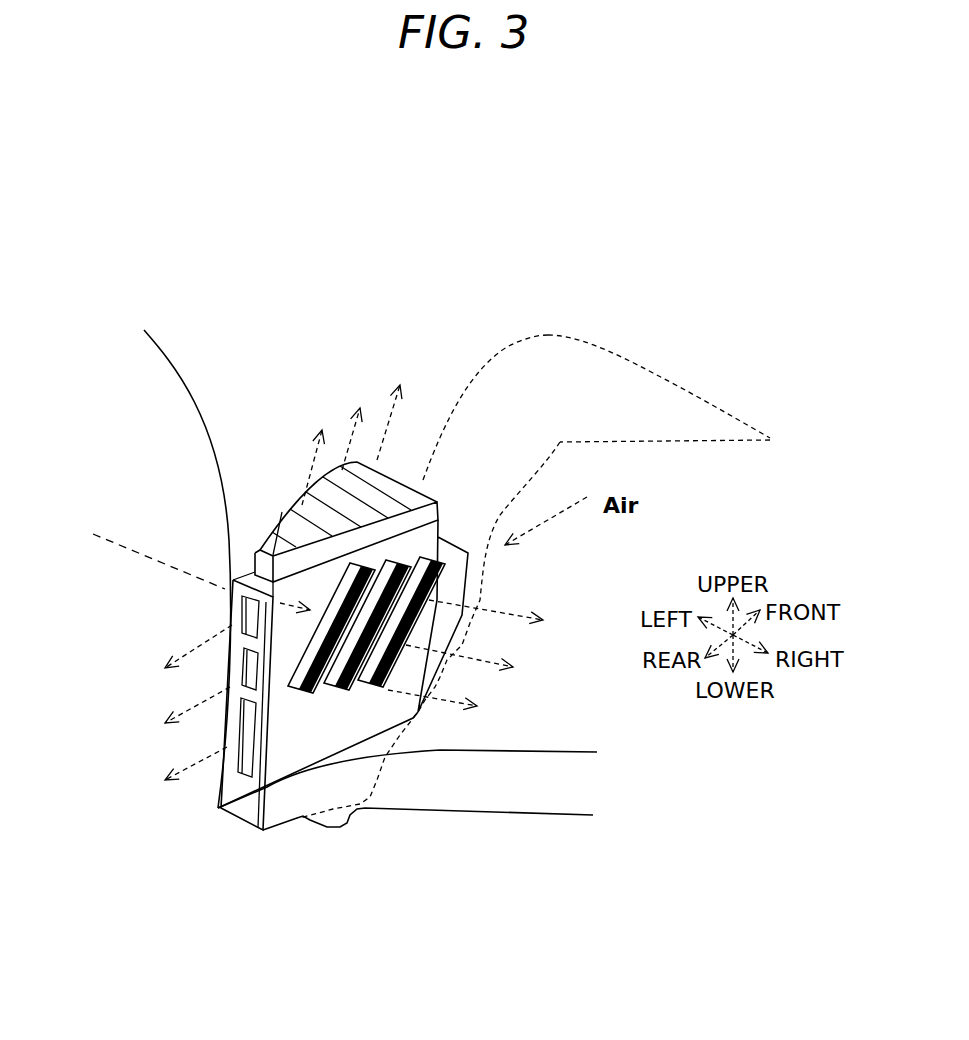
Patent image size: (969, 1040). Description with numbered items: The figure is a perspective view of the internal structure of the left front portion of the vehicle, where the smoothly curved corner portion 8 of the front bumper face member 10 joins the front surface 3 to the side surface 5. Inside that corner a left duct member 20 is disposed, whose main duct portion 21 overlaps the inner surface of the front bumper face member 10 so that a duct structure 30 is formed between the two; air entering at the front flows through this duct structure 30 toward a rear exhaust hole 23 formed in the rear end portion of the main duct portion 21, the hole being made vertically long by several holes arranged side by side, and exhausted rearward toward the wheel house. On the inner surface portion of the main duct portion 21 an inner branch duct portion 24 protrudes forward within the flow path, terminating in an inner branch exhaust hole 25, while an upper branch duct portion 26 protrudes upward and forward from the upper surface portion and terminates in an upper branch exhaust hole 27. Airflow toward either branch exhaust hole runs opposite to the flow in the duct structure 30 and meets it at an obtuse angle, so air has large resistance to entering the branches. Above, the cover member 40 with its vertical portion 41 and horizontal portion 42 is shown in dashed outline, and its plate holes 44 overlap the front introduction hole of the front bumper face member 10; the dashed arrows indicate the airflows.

The front surface 3 is at (583, 808).
The side surface 5 is at (202, 385).
The corner portion 8 is at (364, 650).
The front bumper face member 10 is at (580, 705).
The duct member 20 is at (266, 476).
The main duct portion 21 is at (300, 730).
The rear exhaust hole 23 is at (233, 602).
The inner branch duct portion 24 is at (355, 562).
The inner branch exhaust hole 25 is at (397, 653).
The upper branch duct portion 26 is at (257, 553).
The upper branch exhaust hole 27 is at (273, 520).
The duct structure 30 is at (182, 566).
The cover member 40 is at (740, 388).
The vertical portion 41 is at (462, 438).
The horizontal portion 42 is at (647, 398).
The plate hole 44 is at (482, 582).